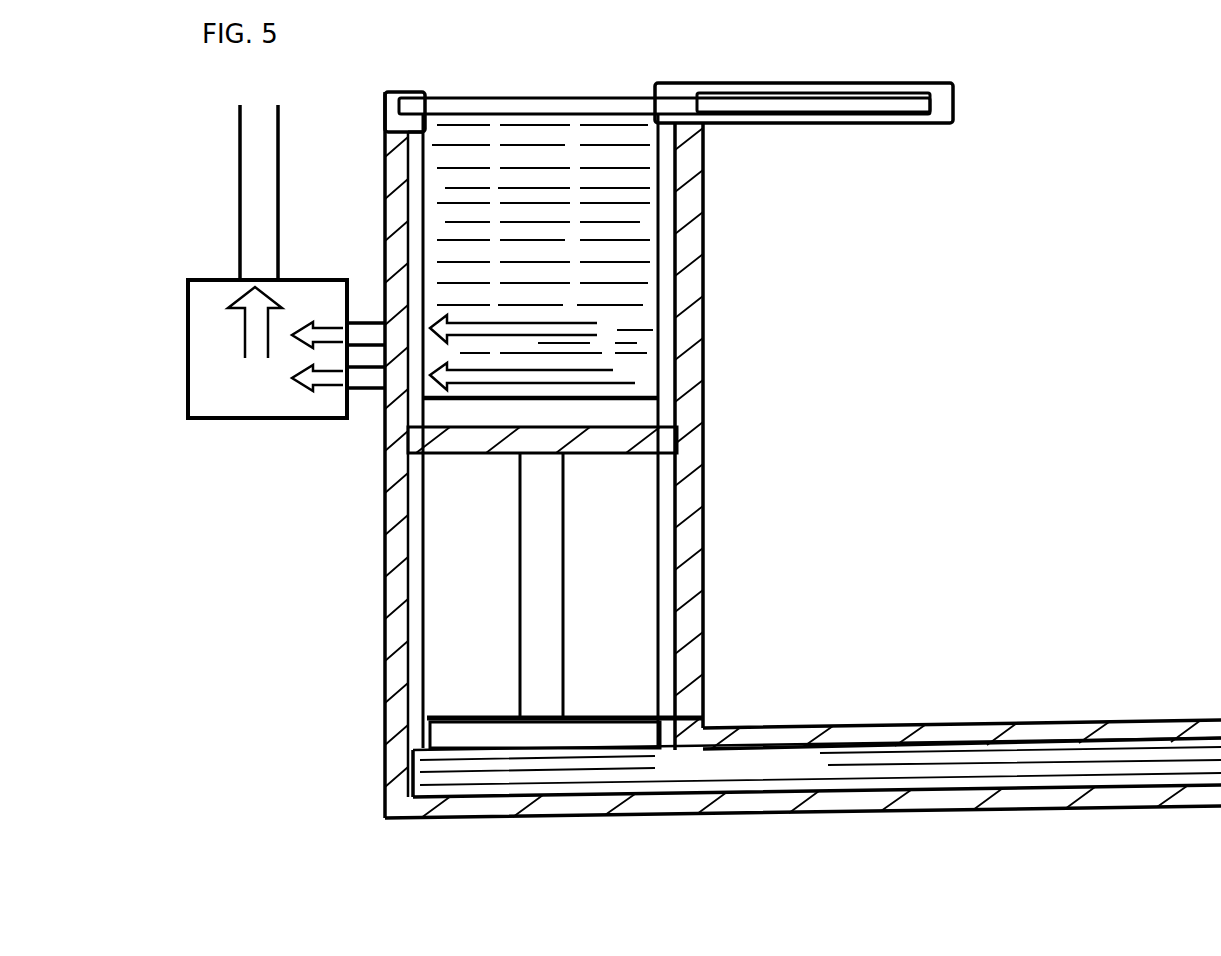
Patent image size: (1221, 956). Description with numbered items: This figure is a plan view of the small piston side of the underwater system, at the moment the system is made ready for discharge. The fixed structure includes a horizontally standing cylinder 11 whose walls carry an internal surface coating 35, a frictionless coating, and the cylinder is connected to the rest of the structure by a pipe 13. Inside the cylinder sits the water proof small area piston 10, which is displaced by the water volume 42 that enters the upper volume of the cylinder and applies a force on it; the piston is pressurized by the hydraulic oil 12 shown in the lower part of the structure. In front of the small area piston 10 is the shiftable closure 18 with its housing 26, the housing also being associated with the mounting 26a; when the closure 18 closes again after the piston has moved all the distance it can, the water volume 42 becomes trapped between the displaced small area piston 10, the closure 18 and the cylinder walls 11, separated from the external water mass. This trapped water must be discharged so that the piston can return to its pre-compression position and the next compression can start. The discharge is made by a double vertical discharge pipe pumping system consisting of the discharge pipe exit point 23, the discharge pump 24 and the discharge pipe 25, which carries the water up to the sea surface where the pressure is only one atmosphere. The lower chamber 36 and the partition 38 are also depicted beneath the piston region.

The small area piston 10 is at (548, 408).
The cylinder 11 is at (687, 640).
The hydraulic oil 12 is at (940, 773).
The pipe 13 is at (1037, 737).
The shiftable closure 18 is at (530, 108).
The discharge pipe exit point 23 is at (367, 380).
The discharge pump 24 is at (208, 372).
The discharge pipe 25 is at (258, 185).
The housing 26 is at (942, 104).
The arm bracket 26a is at (385, 102).
The internal surface coating 35 is at (663, 298).
The cylinder chamber 36 is at (542, 608).
The partition 38 is at (555, 441).
The water volume 42 is at (525, 232).